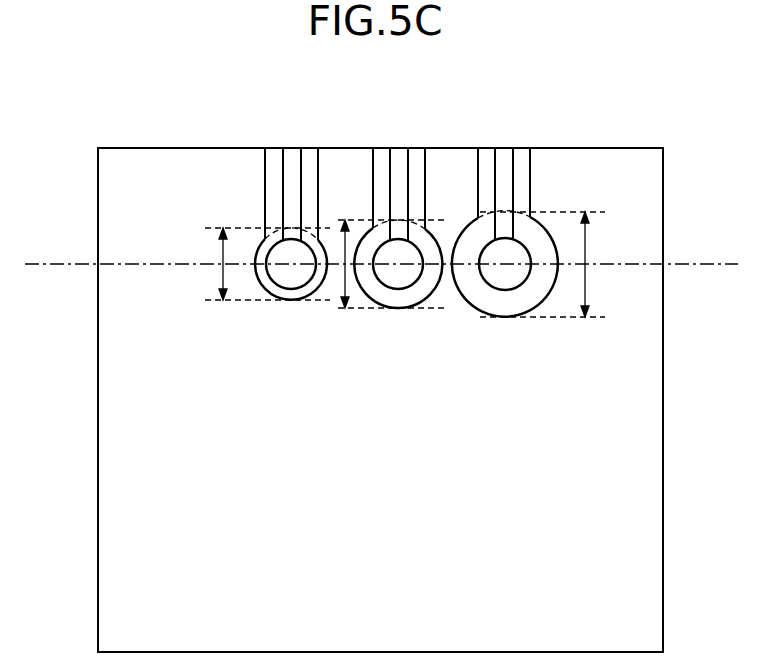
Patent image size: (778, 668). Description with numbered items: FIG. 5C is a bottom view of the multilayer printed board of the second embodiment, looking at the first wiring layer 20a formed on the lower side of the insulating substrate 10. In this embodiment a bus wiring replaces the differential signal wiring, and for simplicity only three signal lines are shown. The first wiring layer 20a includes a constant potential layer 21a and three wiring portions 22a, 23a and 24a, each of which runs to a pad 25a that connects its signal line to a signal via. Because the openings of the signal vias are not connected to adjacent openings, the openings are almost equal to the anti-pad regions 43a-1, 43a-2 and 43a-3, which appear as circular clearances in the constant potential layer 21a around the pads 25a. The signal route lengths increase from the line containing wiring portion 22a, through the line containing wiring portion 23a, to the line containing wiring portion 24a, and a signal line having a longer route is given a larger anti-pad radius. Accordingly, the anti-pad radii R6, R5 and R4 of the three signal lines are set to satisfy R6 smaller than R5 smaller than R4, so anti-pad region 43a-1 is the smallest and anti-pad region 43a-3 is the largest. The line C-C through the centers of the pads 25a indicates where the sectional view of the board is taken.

The insulating substrate 10 is at (98, 617).
The first wiring layer 20a is at (180, 108).
The constant potential layer 21a is at (212, 163).
The wiring portion 22a is at (293, 162).
The wiring portion 23a is at (397, 162).
The wiring portion 24a is at (500, 162).
The pad 25a is at (288, 276).
The anti-pad region 43a-1 is at (261, 307).
The anti-pad region 43a-2 is at (398, 300).
The anti-pad region 43a-3 is at (503, 303).
The anti-pad radius R6 is at (258, 264).
The anti-pad radius R5 is at (345, 278).
The anti-pad radius R4 is at (549, 264).
The line C- C is at (38, 256).